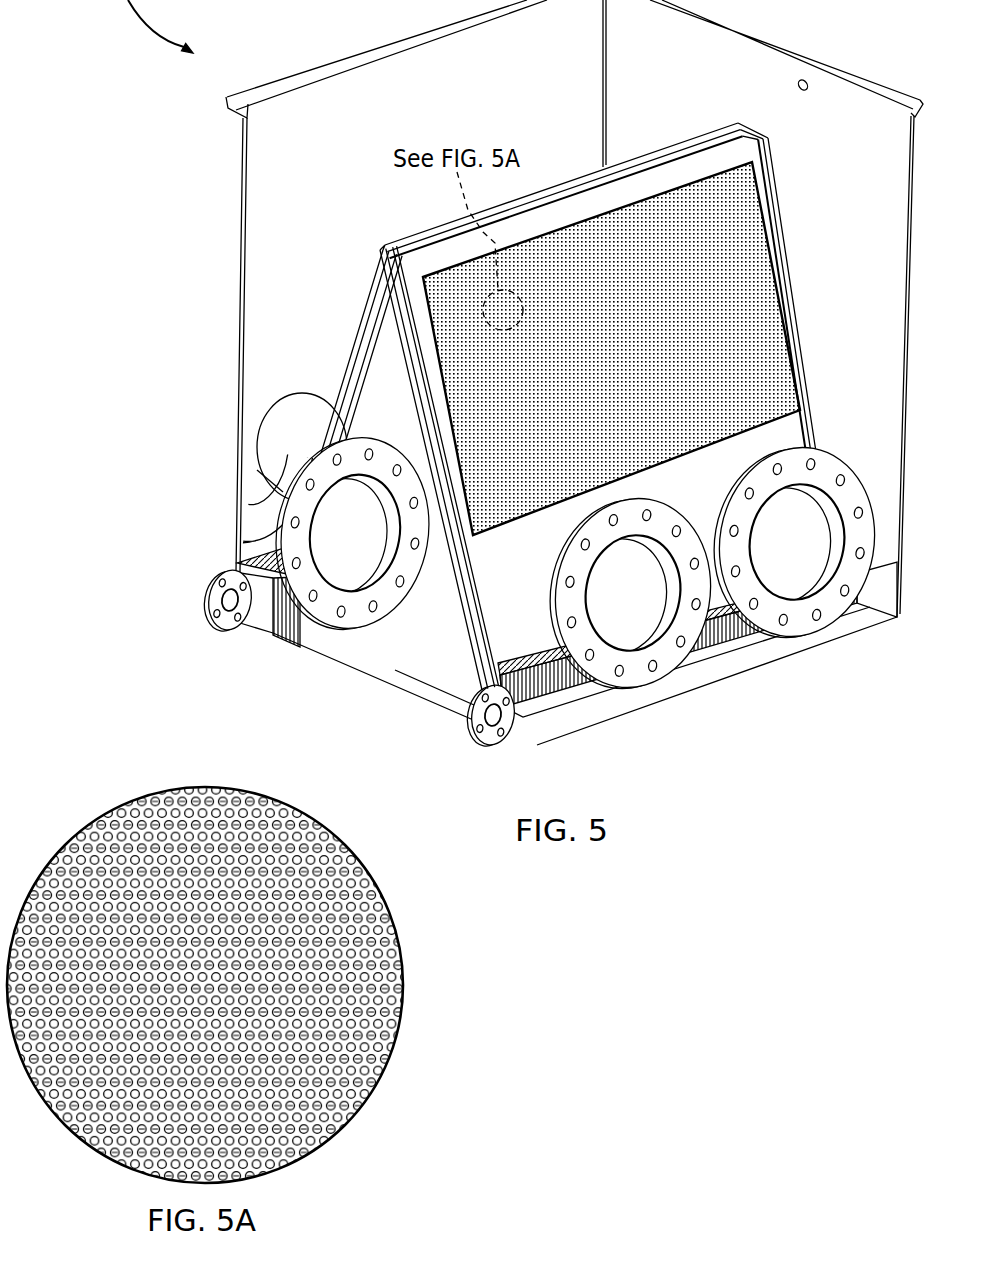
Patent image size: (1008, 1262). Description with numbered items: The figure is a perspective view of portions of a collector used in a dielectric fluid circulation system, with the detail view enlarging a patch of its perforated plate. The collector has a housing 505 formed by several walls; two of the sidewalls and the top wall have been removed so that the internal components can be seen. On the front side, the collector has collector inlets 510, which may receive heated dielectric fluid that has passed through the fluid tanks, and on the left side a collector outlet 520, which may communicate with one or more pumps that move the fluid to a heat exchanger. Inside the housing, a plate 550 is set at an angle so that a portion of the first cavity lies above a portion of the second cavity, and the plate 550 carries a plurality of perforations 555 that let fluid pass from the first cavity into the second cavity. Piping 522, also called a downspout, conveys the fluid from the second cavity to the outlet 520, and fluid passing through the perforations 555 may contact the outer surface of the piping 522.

The housing 505 is at (909, 273).
The collector inlet 510 is at (630, 636).
The collector outlet 520 is at (366, 548).
The piping 522 is at (438, 543).
The plate 550 is at (768, 224).
The perforations 555 is at (631, 348).